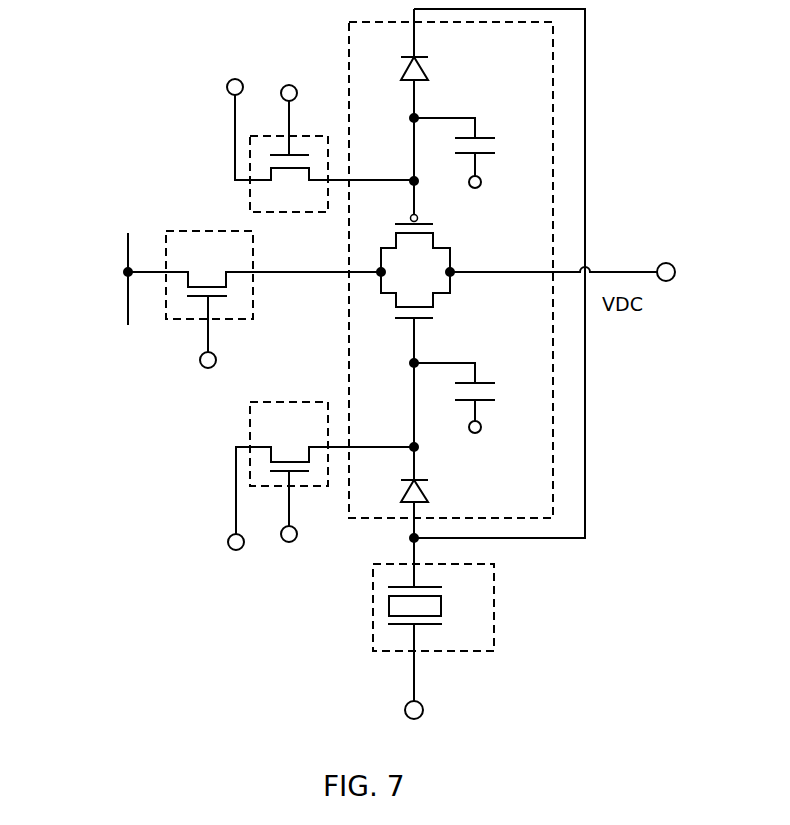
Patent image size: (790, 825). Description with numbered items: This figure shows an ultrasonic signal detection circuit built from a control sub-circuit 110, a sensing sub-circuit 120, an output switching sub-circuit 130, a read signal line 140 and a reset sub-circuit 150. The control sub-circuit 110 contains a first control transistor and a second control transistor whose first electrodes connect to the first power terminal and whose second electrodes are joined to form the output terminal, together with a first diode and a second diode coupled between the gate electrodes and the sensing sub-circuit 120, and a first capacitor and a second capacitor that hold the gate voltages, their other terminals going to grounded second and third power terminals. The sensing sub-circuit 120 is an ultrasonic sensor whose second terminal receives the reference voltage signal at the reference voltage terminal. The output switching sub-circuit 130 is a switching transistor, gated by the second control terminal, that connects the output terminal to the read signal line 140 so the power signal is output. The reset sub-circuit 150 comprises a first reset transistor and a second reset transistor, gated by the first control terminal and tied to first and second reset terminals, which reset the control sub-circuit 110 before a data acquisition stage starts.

The control sub-circuit 110 is at (348, 275).
The sensing sub-circuit 120 is at (453, 651).
The output switching sub-circuit 130 is at (232, 230).
The read signal line 140 is at (127, 305).
The reset sub-circuit 150 is at (250, 153).